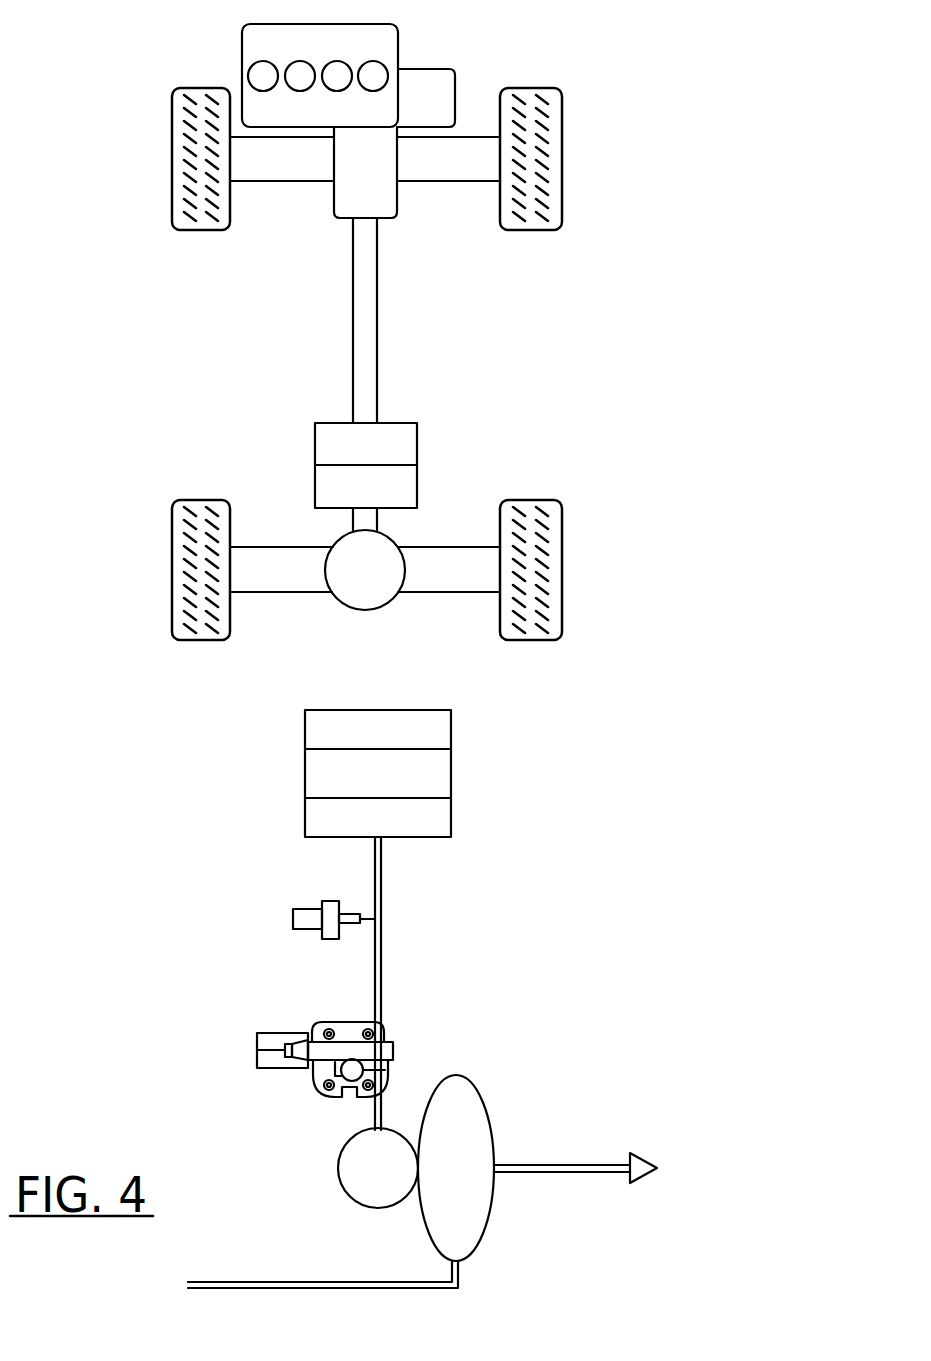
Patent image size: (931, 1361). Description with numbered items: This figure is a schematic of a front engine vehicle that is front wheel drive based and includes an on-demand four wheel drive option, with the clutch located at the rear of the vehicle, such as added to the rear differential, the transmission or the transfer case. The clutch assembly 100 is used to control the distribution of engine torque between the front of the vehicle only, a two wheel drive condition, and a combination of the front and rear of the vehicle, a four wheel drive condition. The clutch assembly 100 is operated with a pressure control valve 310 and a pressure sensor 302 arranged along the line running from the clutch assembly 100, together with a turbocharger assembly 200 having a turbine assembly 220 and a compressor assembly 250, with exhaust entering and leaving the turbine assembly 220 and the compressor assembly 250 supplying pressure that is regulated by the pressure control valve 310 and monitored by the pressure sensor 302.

The clutch assembly 100 is at (451, 732).
The turbocharger assembly 200 is at (560, 977).
The turbine assembly 220 is at (493, 1127).
The compressor assembly 250 is at (345, 1160).
The pressure sensor 302 is at (308, 912).
The pressure control valve 310 is at (318, 1032).